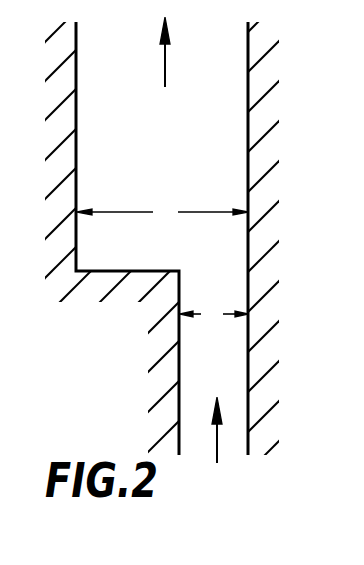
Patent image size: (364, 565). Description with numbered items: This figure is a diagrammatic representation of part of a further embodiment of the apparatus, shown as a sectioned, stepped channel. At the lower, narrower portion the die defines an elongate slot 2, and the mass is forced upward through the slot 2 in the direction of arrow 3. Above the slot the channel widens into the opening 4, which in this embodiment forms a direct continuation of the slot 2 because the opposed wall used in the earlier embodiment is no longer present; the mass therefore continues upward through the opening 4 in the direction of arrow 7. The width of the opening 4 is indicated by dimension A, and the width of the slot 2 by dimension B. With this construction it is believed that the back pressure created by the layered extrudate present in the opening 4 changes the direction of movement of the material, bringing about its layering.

The elongate slot 2 is at (182, 280).
The arrow 3 is at (217, 442).
The opening 4 is at (230, 138).
The arrow 7 is at (163, 60).
The dimension A is at (162, 213).
The dimension B is at (214, 315).